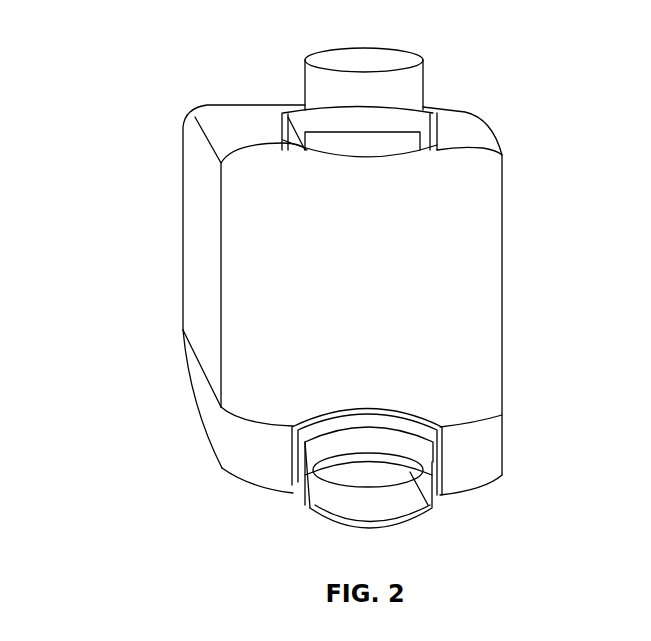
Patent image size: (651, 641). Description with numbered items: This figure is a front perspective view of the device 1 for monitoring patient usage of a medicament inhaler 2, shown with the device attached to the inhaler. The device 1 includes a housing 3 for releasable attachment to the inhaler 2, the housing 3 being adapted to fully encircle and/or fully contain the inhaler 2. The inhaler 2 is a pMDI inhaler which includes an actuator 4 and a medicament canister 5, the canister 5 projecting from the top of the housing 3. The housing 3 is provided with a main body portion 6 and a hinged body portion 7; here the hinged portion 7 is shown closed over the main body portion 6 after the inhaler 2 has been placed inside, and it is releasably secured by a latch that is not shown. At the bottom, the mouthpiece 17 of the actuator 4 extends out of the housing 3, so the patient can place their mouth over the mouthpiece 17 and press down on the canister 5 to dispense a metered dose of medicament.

The device 1 is at (147, 44).
The medicament inhaler 2 is at (440, 76).
The housing 3 is at (162, 167).
The actuator 4 is at (420, 123).
The medicament canister 5 is at (313, 88).
The main body portion 6 is at (197, 272).
The hinged body portion 7 is at (487, 296).
The mouthpiece 17 is at (403, 505).